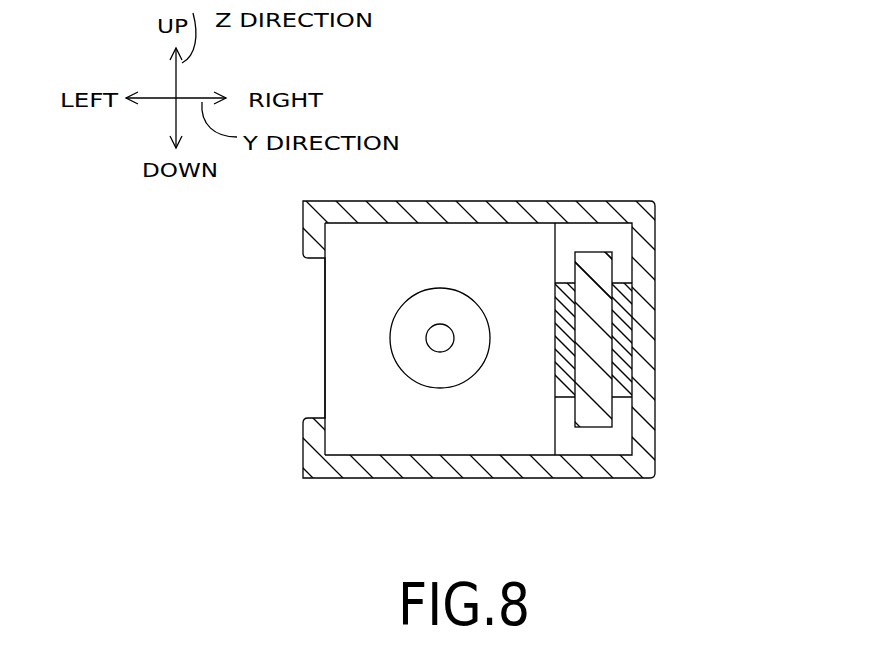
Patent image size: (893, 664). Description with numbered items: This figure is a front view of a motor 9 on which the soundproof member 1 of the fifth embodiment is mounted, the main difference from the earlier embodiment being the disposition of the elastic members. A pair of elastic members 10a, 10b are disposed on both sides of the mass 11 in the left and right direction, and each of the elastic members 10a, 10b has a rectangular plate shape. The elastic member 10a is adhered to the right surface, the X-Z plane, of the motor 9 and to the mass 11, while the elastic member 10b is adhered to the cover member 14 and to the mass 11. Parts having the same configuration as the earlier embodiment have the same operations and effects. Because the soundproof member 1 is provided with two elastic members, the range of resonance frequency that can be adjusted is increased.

The soundproof member 1 is at (628, 183).
The motor 9 is at (325, 333).
The elastic member 10a is at (565, 397).
The elastic member 10b is at (622, 397).
The mass 11 is at (598, 332).
The cover member 14 is at (650, 256).